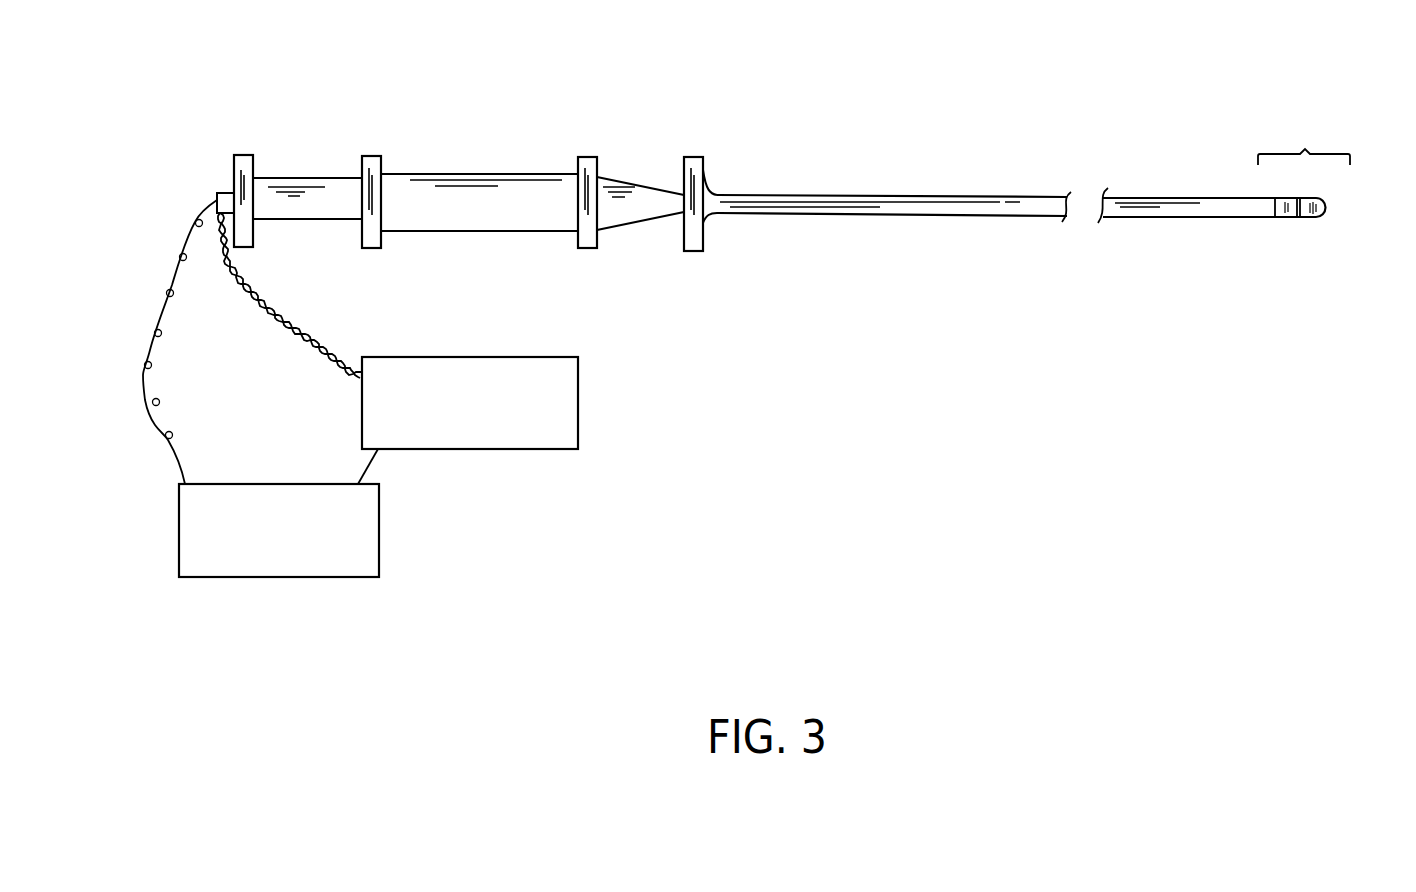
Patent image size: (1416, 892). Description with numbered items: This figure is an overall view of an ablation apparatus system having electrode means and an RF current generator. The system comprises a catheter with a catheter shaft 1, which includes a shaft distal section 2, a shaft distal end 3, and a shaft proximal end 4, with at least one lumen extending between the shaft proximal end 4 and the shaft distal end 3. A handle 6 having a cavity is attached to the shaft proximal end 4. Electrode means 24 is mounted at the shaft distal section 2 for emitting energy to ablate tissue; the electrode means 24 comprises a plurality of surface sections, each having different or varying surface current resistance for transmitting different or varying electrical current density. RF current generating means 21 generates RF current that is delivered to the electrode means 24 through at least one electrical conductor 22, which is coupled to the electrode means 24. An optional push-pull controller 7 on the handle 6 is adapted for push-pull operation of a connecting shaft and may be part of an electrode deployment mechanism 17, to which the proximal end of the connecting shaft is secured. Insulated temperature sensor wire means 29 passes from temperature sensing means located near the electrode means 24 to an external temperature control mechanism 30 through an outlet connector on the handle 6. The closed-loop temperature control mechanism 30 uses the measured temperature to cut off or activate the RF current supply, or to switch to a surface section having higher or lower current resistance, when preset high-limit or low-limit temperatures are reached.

The catheter shaft 1 is at (952, 182).
The shaft distal section 2 is at (1304, 164).
The shaft distal end 3 is at (1327, 195).
The shaft proximal end 4 is at (717, 175).
The handle 6 is at (480, 163).
The push-pull controller 7 is at (257, 149).
The electrode deployment mechanism 17 is at (300, 172).
The RF current generating means 21 is at (375, 532).
The electrical conductor 22 is at (147, 387).
The electrode means 24 is at (1299, 241).
The insulated temperature sensor wire means 29 is at (310, 325).
The temperature control mechanism 30 is at (573, 373).